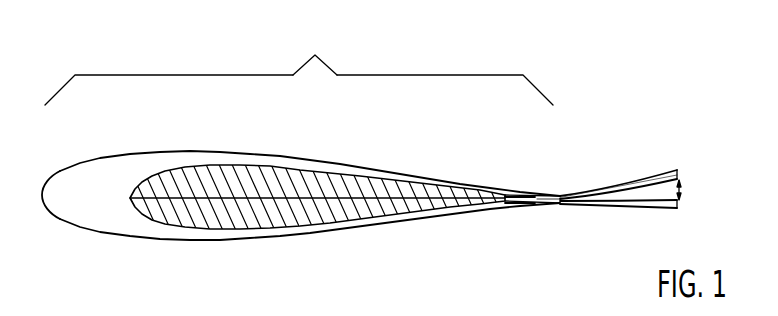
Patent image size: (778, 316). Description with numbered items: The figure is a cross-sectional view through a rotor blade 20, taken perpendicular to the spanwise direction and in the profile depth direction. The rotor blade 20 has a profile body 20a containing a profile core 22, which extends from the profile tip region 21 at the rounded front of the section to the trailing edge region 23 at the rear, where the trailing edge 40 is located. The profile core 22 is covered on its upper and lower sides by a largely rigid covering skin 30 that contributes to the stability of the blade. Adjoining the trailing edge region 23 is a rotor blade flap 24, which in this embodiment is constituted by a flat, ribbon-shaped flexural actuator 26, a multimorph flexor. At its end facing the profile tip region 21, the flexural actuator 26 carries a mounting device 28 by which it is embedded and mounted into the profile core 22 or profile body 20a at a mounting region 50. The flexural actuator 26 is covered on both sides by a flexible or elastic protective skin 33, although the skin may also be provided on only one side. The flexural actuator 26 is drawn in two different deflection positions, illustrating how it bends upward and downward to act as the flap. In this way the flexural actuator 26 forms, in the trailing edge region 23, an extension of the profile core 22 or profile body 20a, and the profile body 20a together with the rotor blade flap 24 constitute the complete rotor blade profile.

The rotor blade 20 is at (152, 43).
The profile body 20a is at (315, 45).
The profile tip region 21 is at (63, 156).
The profile core 22 is at (315, 180).
The trailing edge region 23 is at (515, 171).
The rotor blade flap 24 is at (594, 171).
The flexural actuator 26 is at (610, 207).
The mounting device 28 is at (522, 212).
The covering skin 30 is at (460, 176).
The protective skin 33 is at (648, 177).
The trailing edge 40 is at (681, 176).
The mounting region 50 is at (538, 226).